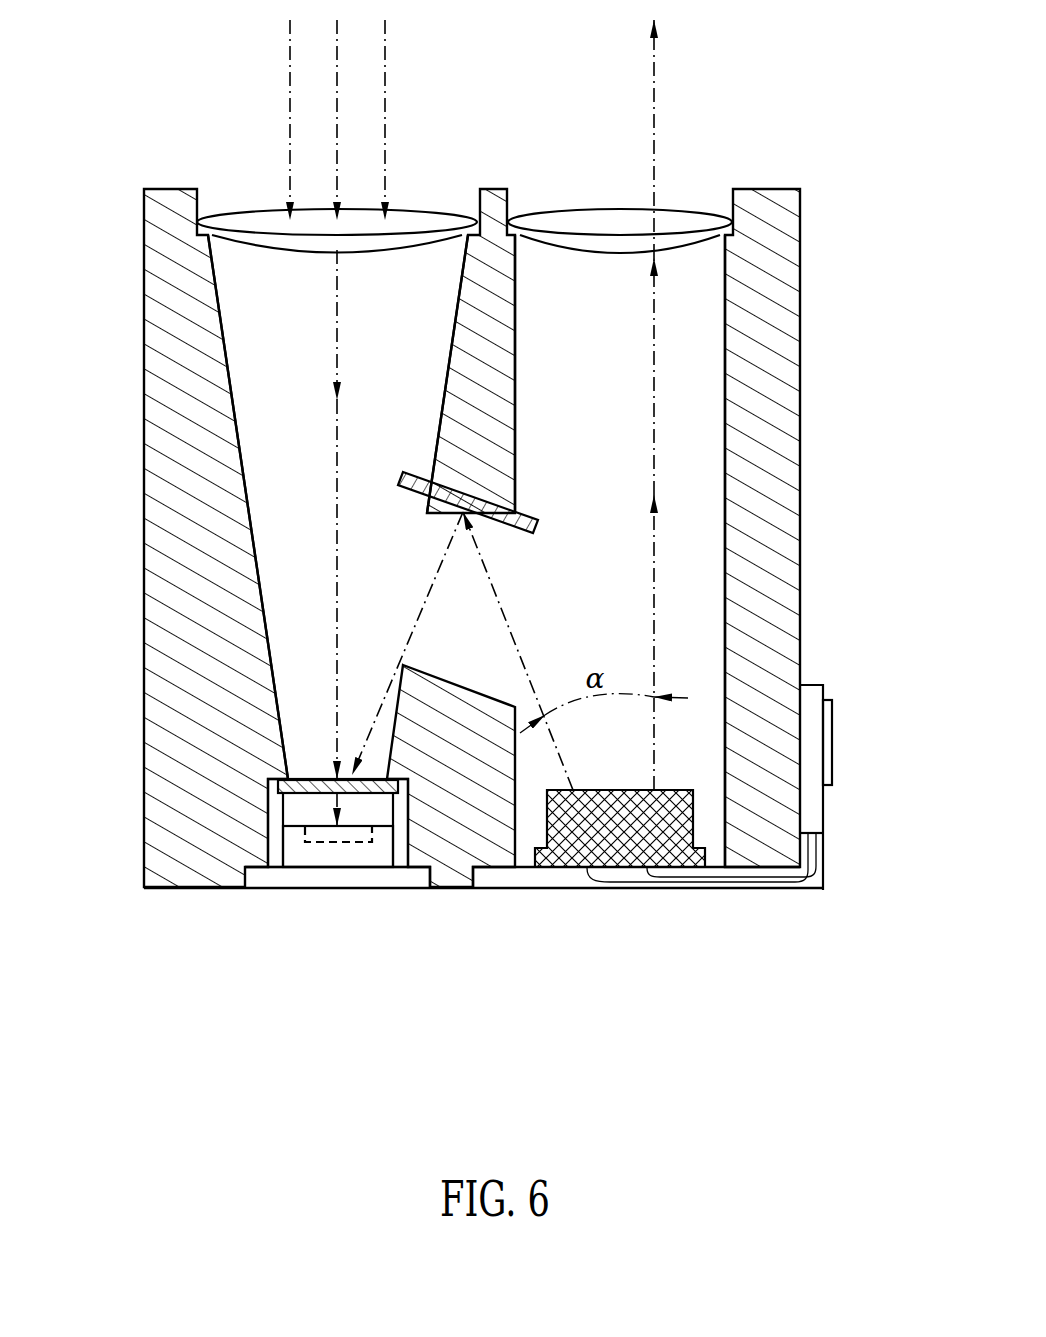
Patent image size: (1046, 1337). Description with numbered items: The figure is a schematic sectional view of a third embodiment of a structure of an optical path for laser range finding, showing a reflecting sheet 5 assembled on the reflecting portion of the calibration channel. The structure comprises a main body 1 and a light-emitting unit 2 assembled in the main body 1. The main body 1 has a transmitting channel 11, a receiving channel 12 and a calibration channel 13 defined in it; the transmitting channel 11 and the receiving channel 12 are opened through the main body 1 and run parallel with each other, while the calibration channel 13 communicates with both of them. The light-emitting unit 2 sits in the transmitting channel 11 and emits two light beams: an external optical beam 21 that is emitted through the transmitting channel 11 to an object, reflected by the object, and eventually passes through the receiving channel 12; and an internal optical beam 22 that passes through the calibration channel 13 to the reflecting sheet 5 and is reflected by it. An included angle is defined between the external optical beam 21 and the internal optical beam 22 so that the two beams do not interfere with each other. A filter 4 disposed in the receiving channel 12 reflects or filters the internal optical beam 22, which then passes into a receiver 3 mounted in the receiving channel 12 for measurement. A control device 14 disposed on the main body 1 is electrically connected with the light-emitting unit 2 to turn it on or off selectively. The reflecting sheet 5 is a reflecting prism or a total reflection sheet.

The main body 1 is at (783, 325).
The transmitting channel 11 is at (695, 447).
The receiving channel 12 is at (287, 432).
The calibration channel 13 is at (483, 655).
The control device 14 is at (810, 745).
The light-emitting unit 2 is at (575, 840).
The external optical beam 21 is at (654, 554).
The internal optical beam 22 is at (510, 622).
The receiver 3 is at (327, 855).
The filter 4 is at (382, 792).
The reflecting sheet 5 is at (437, 505).